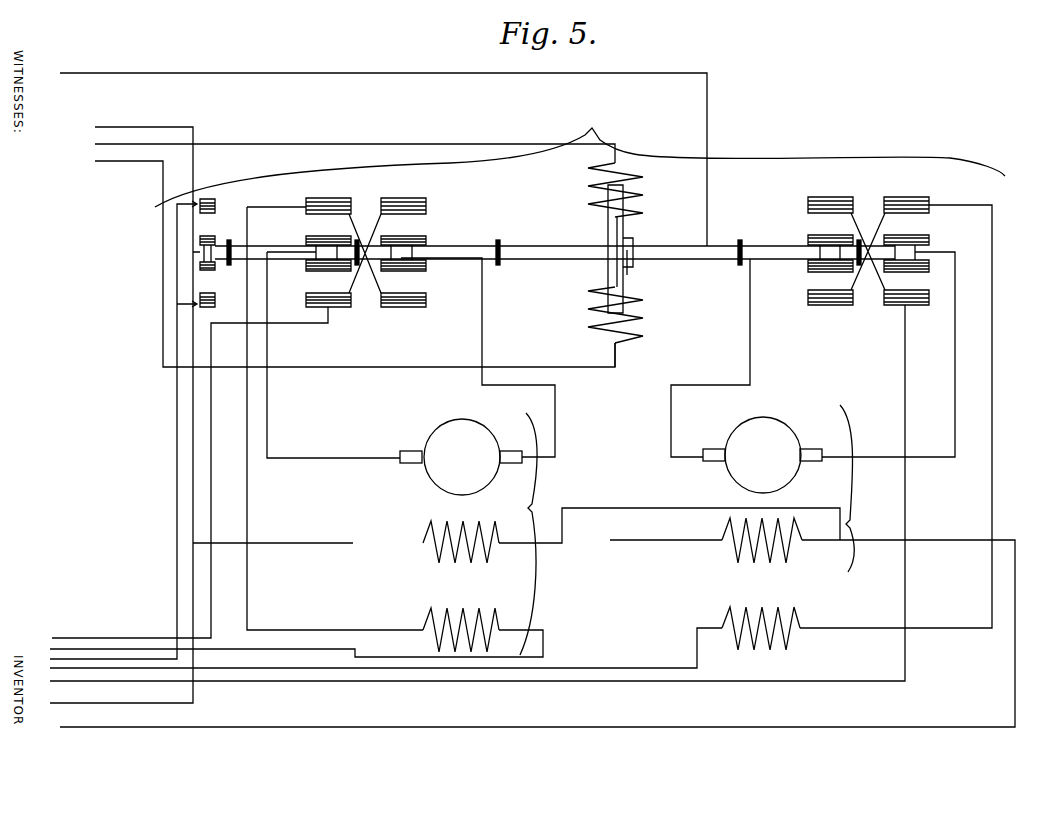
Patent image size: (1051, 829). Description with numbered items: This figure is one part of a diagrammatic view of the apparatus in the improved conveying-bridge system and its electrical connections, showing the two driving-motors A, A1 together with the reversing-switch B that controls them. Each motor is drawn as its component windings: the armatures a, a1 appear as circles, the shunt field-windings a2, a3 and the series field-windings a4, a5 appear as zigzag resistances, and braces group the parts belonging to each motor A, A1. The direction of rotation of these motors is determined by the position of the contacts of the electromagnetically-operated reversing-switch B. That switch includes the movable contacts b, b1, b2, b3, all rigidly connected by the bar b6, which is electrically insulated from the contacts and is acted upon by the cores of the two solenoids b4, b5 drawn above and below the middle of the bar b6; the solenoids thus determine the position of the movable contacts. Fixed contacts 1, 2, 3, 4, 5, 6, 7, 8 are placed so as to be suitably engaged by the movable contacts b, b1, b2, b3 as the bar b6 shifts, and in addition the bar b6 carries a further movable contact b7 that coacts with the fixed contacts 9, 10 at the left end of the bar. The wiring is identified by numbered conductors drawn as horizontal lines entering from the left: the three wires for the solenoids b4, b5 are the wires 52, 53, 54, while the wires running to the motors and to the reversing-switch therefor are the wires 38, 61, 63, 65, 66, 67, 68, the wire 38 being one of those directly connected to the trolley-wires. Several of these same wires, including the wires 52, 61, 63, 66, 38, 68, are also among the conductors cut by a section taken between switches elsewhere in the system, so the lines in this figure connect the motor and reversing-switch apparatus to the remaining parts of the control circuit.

The solenoid wire 52 is at (368, 152).
The trolley-wire connecting wire 38 is at (113, 414).
The solenoid wire 53 is at (341, 149).
The solenoid wire 54 is at (341, 260).
The connecting wire 66 is at (123, 433).
The connecting wire 65 is at (191, 475).
The connecting wire 63 is at (288, 643).
The connecting wire 61 is at (376, 651).
The connecting wire 67 is at (467, 496).
The connecting wire 68 is at (524, 469).
The fixed contact 9 is at (208, 199).
The fixed contact 10 is at (215, 299).
The contact 1 is at (332, 198).
The contact 2 is at (412, 198).
The contact 3 is at (340, 307).
The contact 4 is at (405, 307).
The contact 5 is at (836, 197).
The contact 6 is at (916, 197).
The contact 7 is at (828, 305).
The contact 8 is at (892, 305).
The movable contact b is at (330, 236).
The movable contact b1 is at (410, 236).
The movable contact b2 is at (834, 229).
The movable contact b3 is at (911, 229).
The solenoid b4 is at (646, 193).
The solenoid b5 is at (643, 308).
The bar b6 is at (547, 264).
The movable contact b7 is at (213, 236).
The reversing-switch B is at (628, 233).
The armature a is at (461, 449).
The armature a1 is at (778, 428).
The shunt field-winding a2 is at (468, 520).
The shunt field-winding a3 is at (803, 552).
The series field-winding a4 is at (428, 612).
The series field-winding a5 is at (797, 610).
The driving-motor A is at (534, 534).
The driving-motor A1 is at (862, 488).